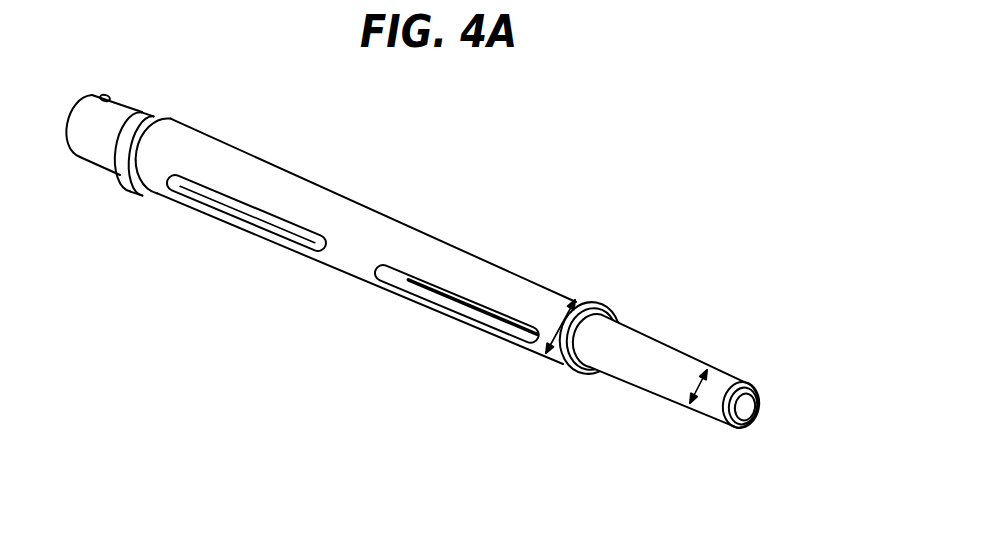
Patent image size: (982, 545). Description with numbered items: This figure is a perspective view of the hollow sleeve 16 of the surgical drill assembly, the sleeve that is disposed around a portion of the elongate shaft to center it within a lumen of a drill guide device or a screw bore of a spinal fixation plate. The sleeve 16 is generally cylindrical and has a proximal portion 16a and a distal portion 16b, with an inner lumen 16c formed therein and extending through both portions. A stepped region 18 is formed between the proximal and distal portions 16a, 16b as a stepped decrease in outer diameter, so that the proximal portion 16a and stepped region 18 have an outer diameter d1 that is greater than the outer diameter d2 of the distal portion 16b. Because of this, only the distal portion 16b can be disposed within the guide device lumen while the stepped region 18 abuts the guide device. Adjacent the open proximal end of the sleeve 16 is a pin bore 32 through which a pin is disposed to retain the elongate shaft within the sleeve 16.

The hollow sleeve 16 is at (609, 138).
The proximal portion 16a is at (388, 245).
The distal portion 16b is at (666, 376).
The inner lumen 16c is at (745, 407).
The stepped region 18 is at (608, 318).
The pin bore 32 is at (107, 96).
The outer diameter of the proximal portion d1 is at (563, 337).
The outer diameter of the distal portion d2 is at (705, 390).